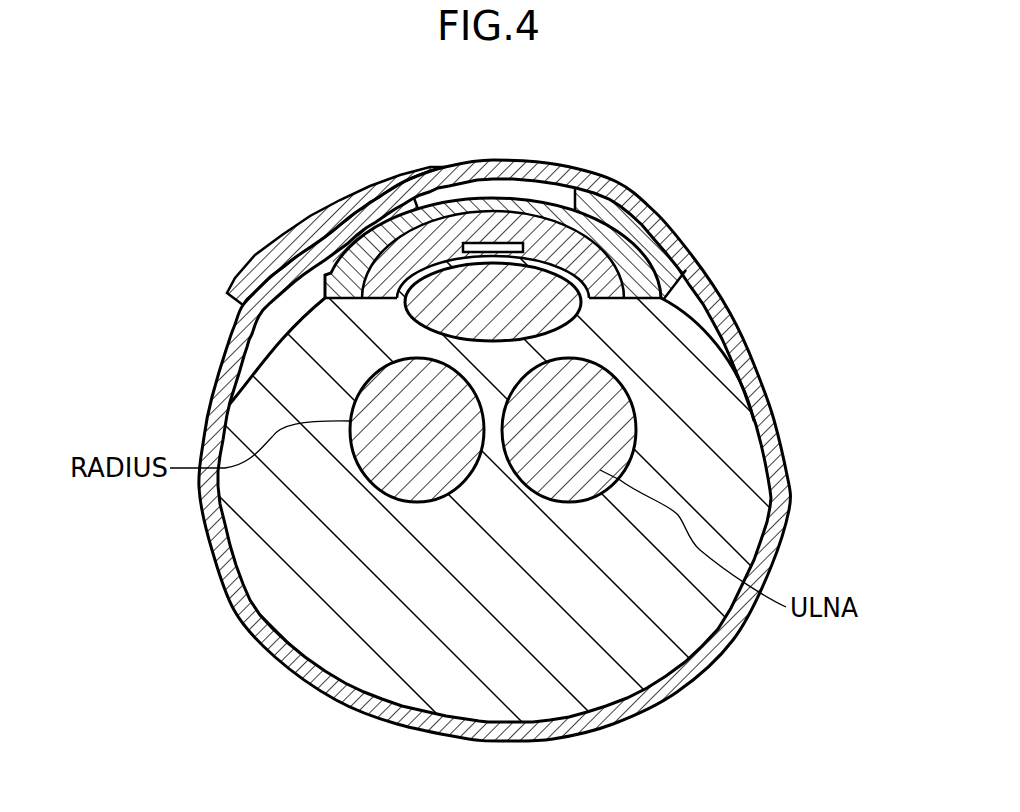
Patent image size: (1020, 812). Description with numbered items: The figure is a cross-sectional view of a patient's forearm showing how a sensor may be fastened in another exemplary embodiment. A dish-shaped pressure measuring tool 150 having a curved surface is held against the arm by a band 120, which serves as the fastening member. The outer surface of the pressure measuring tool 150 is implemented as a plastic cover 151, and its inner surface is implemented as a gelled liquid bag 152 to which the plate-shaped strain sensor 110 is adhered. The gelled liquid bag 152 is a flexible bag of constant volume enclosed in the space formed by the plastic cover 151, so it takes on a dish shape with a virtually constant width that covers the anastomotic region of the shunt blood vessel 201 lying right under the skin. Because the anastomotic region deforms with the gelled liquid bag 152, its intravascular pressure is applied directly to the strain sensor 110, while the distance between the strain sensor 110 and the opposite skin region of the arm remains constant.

The strain sensor 110 is at (493, 243).
The band 120 is at (792, 456).
The dish-shaped pressure measuring tool 150 is at (688, 100).
The plastic cover 151 is at (630, 243).
The gelled liquid bag 152 is at (573, 227).
The shunt blood vessel 201 is at (563, 320).